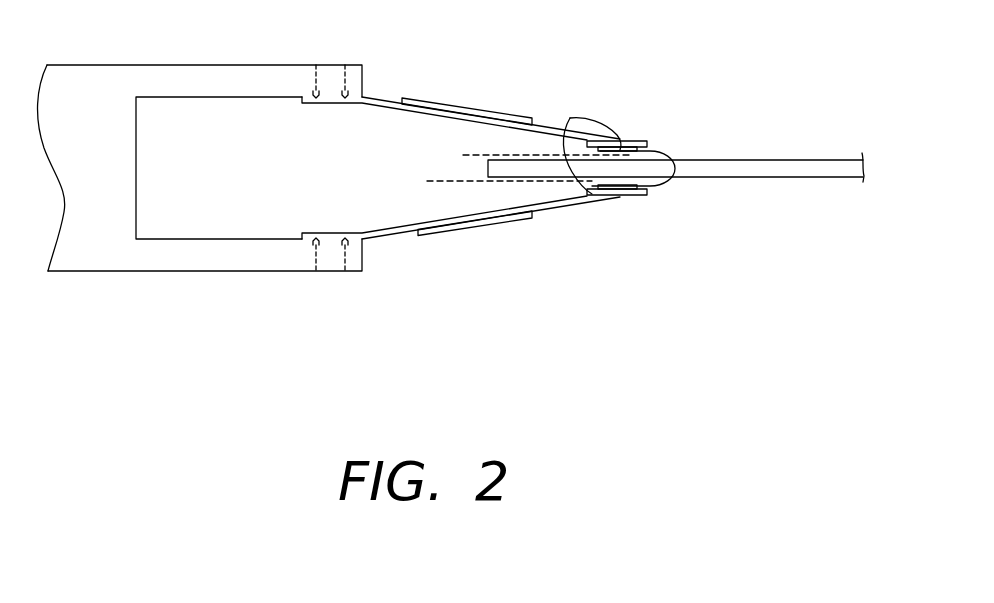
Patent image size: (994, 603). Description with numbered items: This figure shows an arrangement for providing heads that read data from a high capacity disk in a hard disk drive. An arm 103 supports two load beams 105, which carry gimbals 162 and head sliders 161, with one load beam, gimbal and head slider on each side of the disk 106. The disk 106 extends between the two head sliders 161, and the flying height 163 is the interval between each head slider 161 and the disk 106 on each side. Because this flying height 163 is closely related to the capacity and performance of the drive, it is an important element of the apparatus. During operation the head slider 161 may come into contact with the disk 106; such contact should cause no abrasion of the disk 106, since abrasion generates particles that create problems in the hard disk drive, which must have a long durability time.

The arm 103 is at (197, 268).
The load beam 105 is at (480, 117).
The disk 106 is at (780, 172).
The head slider 161 is at (670, 163).
The gimbal 162 is at (570, 118).
The flying height 163 is at (477, 182).